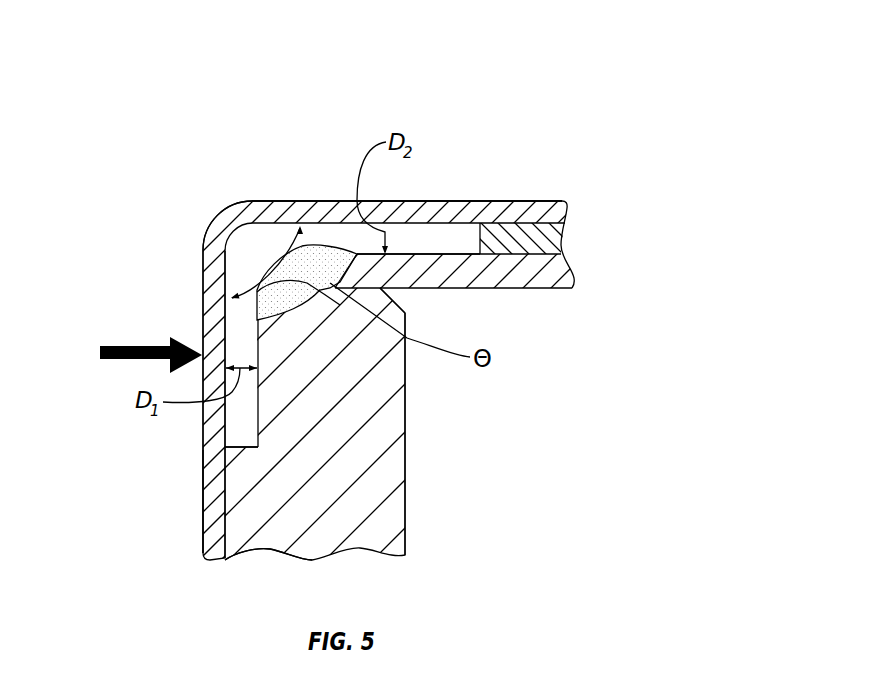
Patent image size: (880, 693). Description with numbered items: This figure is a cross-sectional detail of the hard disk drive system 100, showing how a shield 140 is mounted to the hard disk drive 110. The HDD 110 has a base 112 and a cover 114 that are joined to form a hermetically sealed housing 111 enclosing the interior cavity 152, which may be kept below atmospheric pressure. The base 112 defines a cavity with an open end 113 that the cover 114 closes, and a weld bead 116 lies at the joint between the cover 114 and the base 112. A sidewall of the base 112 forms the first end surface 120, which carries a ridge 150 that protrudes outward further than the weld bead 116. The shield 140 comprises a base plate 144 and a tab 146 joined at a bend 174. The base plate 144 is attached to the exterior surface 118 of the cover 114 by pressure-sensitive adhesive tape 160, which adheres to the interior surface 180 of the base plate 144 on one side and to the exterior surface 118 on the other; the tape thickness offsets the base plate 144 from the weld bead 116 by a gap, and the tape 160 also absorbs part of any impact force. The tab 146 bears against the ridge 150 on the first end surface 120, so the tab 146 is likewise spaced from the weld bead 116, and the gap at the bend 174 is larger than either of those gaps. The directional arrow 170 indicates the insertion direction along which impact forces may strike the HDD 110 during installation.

The hard disk drive system 100 is at (668, 132).
The hard disk drive 110 is at (409, 538).
The housing 111 is at (242, 568).
The base 112 is at (330, 522).
The open end 113 is at (395, 303).
The cover 114 is at (508, 277).
The weld bead 116 is at (310, 262).
The exterior surface of the cover 118 is at (417, 254).
The first end surface 120 is at (216, 485).
The shield 140 is at (517, 198).
The base plate 144 is at (275, 200).
The tab 146 is at (213, 522).
The ridge 150 is at (252, 462).
The interior cavity 152 is at (530, 430).
The pressure-sensitive adhesive tape 160 is at (542, 240).
The directional arrow 170 is at (142, 345).
The bend 174 is at (222, 220).
The interior surface of the base plate 180 is at (493, 200).